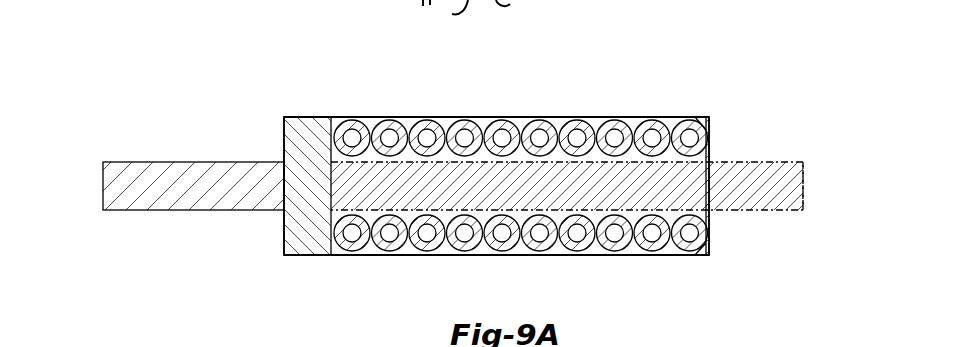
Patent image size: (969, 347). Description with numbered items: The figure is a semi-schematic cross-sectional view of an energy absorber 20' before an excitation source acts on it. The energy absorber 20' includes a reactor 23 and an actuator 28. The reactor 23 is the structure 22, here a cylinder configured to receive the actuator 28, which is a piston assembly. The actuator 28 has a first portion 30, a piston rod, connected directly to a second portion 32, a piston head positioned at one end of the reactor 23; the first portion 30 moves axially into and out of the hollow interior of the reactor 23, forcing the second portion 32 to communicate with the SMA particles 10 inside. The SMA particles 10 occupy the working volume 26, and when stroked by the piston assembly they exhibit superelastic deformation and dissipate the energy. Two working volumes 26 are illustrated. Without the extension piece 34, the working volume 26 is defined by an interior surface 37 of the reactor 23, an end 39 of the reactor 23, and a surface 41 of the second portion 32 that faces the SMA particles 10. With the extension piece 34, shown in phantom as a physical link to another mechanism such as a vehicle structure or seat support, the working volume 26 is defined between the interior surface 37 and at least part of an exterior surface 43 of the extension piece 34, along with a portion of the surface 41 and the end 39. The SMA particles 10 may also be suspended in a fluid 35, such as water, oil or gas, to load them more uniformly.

The SMA particles 10 is at (352, 130).
The energy absorber 20' is at (560, 131).
The structure 22 is at (525, 117).
The reactor 23 is at (525, 117).
The working volume 26 is at (410, 120).
The actuator 28 is at (250, 100).
The first portion 30 is at (187, 172).
The second portion 32 is at (310, 127).
The extension piece 34 is at (760, 163).
The fluid 35 is at (710, 250).
The interior surface 37 is at (372, 118).
The end 39 is at (707, 117).
The surface 41 is at (337, 255).
The exterior surface 43 is at (798, 160).